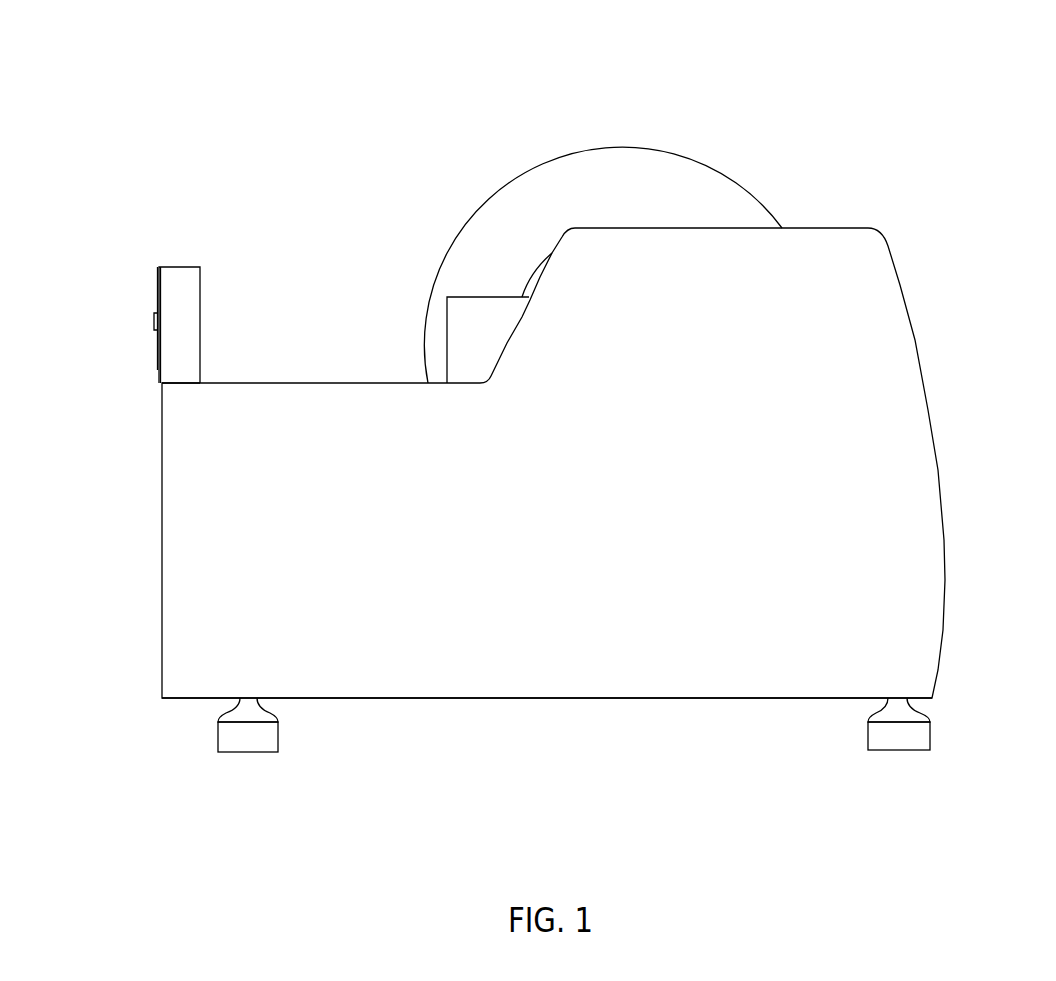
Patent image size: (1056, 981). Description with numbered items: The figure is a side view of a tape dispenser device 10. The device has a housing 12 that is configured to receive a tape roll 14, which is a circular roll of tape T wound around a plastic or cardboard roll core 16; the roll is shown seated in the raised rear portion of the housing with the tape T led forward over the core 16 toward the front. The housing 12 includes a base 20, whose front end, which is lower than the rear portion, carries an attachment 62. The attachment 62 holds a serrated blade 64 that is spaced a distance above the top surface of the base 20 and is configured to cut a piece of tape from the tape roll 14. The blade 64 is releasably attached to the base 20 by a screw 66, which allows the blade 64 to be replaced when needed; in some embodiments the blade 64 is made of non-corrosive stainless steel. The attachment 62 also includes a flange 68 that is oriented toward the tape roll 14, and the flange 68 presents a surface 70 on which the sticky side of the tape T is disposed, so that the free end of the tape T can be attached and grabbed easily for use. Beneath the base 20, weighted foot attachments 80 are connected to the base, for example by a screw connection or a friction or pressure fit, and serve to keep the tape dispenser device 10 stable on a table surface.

The tape dispenser device 10 is at (70, 124).
The housing 12 is at (923, 428).
The tape roll 14 is at (768, 176).
The tape T is at (780, 203).
The roll core 16 is at (532, 268).
The base 20 is at (745, 715).
The attachment 62 is at (178, 384).
The serrated blade 64 is at (158, 270).
The screw 66 is at (153, 322).
The flange 68 is at (159, 272).
The surface 70 is at (197, 267).
The weighted foot attachments 80 is at (240, 740).